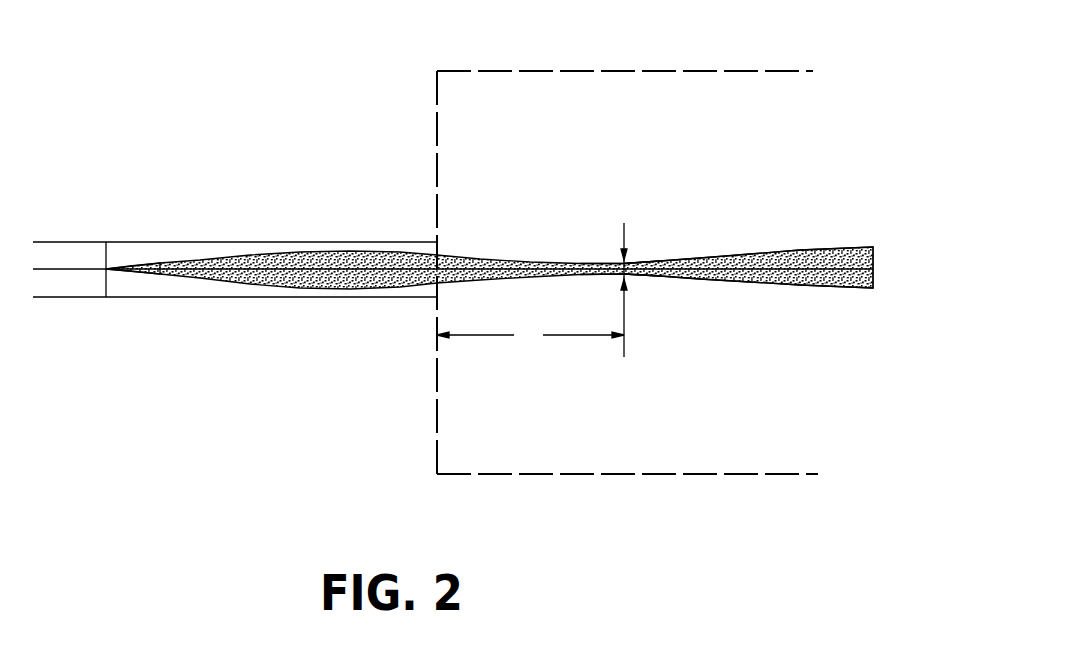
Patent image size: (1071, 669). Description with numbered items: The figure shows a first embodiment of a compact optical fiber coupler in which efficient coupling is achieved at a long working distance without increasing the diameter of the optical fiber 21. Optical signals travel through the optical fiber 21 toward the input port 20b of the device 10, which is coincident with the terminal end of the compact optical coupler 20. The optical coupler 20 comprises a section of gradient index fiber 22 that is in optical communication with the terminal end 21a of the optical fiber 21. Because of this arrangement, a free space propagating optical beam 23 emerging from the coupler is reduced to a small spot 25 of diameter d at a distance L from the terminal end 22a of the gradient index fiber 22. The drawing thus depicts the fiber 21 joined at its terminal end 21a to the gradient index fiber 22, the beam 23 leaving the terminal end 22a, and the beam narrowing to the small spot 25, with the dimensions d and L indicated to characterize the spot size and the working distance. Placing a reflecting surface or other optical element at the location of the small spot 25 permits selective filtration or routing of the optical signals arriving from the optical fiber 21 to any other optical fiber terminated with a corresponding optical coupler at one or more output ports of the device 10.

The device 10 is at (555, 71).
The compact optical coupler 20 is at (207, 85).
The optical fiber 21 is at (52, 240).
The terminal end of optical fiber 21a is at (100, 255).
The gradient index fiber 22 is at (293, 240).
The terminal end of gradient index fiber 22a is at (122, 258).
The input port 20b is at (405, 283).
The free space propagating optical beam 23 is at (750, 257).
The small spot 25 is at (611, 254).
The diameter d is at (626, 237).
The distance L is at (530, 333).